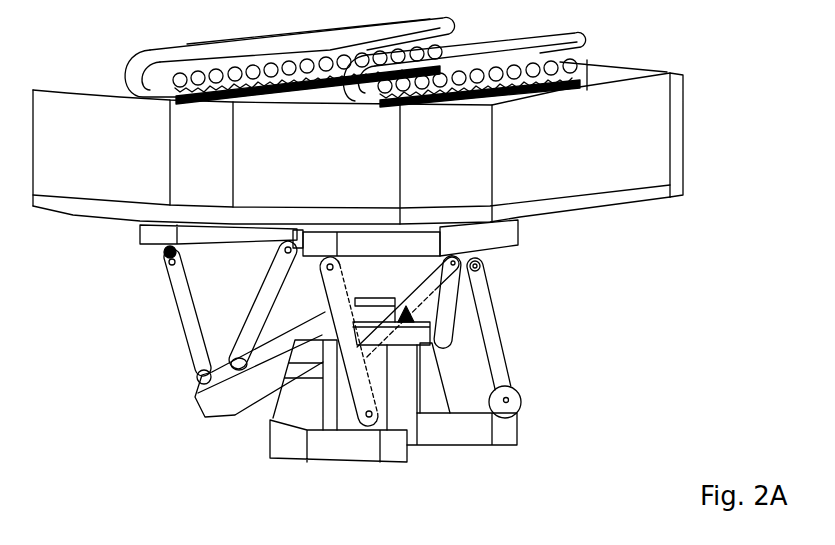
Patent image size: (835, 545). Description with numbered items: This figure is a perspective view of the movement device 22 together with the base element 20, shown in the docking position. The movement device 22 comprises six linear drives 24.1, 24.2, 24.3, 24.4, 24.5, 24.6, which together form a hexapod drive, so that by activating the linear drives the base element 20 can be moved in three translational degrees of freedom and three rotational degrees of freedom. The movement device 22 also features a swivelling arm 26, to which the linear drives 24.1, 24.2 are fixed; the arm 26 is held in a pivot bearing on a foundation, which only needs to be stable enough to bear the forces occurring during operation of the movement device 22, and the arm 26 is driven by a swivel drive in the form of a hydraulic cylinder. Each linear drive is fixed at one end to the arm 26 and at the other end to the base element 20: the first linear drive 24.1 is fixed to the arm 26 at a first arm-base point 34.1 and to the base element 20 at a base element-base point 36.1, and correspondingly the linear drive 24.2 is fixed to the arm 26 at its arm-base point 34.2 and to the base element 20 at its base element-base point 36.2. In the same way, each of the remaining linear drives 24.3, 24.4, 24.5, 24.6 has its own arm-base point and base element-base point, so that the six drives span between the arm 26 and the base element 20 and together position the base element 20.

The base element 20 is at (677, 190).
The movement device 22 is at (340, 393).
The first linear drive 24.1 is at (262, 305).
The linear drive 24.2 is at (177, 283).
The linear drive 24.3 is at (457, 302).
The linear drive 24.4 is at (400, 340).
The linear drive 24.5 is at (498, 370).
The linear drive 24.6 is at (355, 403).
The swivelling arm 26 is at (215, 418).
The first arm-base point 34.1 is at (235, 365).
The arm-base point 34.2 is at (200, 390).
The base element-base point 36.1 is at (289, 254).
The base element-base point 36.2 is at (163, 253).